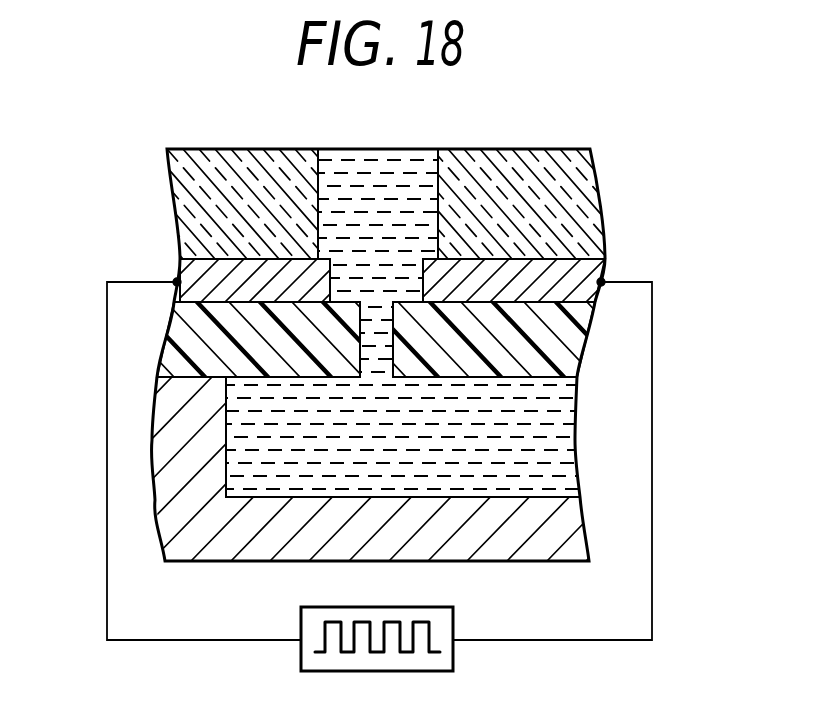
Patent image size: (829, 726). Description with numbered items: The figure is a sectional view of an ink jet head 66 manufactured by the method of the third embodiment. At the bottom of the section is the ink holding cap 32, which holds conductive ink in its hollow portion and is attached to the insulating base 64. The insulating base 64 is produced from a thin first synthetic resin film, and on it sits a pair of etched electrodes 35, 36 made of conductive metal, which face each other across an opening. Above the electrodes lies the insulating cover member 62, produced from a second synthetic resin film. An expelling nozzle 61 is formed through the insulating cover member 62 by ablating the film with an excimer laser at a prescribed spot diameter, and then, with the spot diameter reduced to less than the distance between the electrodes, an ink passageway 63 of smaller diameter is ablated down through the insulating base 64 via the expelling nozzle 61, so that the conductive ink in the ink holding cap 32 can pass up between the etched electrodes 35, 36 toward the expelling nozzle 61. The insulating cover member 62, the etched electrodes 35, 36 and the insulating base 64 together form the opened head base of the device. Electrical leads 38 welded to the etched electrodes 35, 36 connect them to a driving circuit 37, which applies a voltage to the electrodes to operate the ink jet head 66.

The ink jet head 66 is at (670, 135).
The insulating cover member 62 is at (177, 183).
The expelling nozzles 61 is at (414, 149).
The ink passageways 63 is at (376, 333).
The etched electrode 35 is at (178, 268).
The etched electrode 36 is at (604, 270).
The insulating base 64 is at (177, 333).
The ink holding cap 32 is at (567, 510).
The electrical leads 38 is at (652, 595).
The driving circuit 37 is at (435, 672).